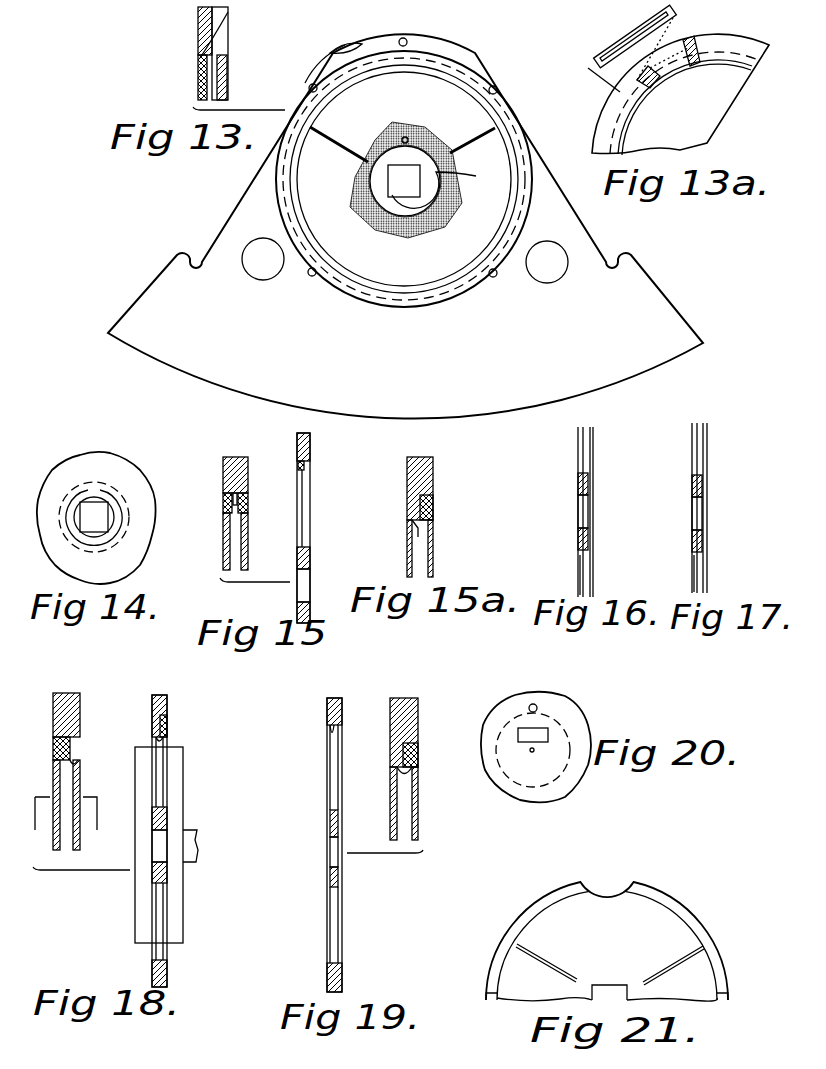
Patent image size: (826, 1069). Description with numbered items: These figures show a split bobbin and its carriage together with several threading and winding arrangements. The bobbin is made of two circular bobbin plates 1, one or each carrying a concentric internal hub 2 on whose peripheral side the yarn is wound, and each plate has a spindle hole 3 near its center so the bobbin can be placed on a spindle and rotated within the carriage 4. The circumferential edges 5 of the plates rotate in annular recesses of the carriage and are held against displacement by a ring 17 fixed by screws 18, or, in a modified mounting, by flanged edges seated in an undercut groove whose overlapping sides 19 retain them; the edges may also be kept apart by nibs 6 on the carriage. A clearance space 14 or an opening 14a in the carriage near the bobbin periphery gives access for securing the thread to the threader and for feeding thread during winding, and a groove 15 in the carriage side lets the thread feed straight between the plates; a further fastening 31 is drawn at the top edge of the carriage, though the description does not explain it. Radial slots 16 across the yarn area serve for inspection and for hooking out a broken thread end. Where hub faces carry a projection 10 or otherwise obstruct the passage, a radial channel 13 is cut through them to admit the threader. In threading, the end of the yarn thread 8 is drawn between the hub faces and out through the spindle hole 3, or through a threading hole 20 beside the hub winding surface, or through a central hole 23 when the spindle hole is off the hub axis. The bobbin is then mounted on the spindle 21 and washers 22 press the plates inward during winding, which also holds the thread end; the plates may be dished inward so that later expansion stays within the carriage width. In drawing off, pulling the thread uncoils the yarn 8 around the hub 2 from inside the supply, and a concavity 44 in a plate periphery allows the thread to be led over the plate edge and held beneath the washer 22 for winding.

In FIG. 13, the bobbin plates 1 is at (186, 95).
In FIG. 13A, the bobbin plates 1 is at (685, 107).
In FIG. 14, the bobbin plates 1 is at (96, 518).
In FIG. 15, the bobbin plates 1 is at (244, 551).
In FIG. 15A, the bobbin plates 1 is at (430, 546).
In FIG. 16, the bobbin plates 1 is at (582, 576).
In FIG. 17, the bobbin plates 1 is at (695, 576).
In FIG. 18, the bobbin plates 1 is at (158, 791).
In FIG. 19, the bobbin plates 1 is at (328, 786).
In FIG. 20, the bobbin plates 1 is at (578, 729).
In FIG. 21, the bobbin plates 1 is at (607, 946).
In FIG. 13, the hub 2 is at (395, 197).
In FIG. 14, the hub 2 is at (96, 552).
In FIG. 15, the hub 2 is at (311, 549).
In FIG. 16, the hub 2 is at (590, 551).
In FIG. 17, the hub 2 is at (703, 551).
In FIG. 18, the hub 2 is at (167, 809).
In FIG. 19, the hub 2 is at (340, 888).
In FIG. 20, the hub 2 is at (500, 790).
In FIG. 13, the spindle hole 3 is at (404, 166).
In FIG. 14, the spindle hole 3 is at (94, 517).
In FIG. 15, the spindle hole 3 is at (311, 588).
In FIG. 16, the spindle hole 3 is at (578, 514).
In FIG. 17, the spindle hole 3 is at (693, 516).
In FIG. 18, the spindle hole 3 is at (167, 841).
In FIG. 19, the spindle hole 3 is at (330, 846).
In FIG. 20, the spindle hole 3 is at (525, 731).
In FIG. 21, the spindle hole 3 is at (603, 985).
In FIG. 13, the carriage 4 is at (189, 22).
In FIG. 13A, the carriage 4 is at (606, 55).
In FIG. 15, the carriage 4 is at (223, 469).
In FIG. 15A, the carriage 4 is at (407, 471).
In FIG. 18, the carriage 4 is at (67, 694).
In FIG. 19, the carriage 4 is at (342, 701).
In FIG. 13, the circumferential edges 5 is at (372, 305).
In FIG. 15, the circumferential edges 5 is at (245, 500).
In FIG. 21, the circumferential edges 5 is at (525, 904).
In FIG. 18, the nibs 6 is at (76, 763).
In FIG. 19, the nibs 6 is at (328, 744).
In FIG. 13, the yarn thread 8 is at (439, 189).
In FIG. 16, the yarn thread 8 is at (580, 449).
In FIG. 17, the yarn thread 8 is at (693, 446).
In FIG. 14, the projection 10 is at (80, 538).
In FIG. 14, the channel 13 is at (96, 490).
In FIG. 13, the clearance space 14 is at (332, 62).
In FIG. 13A, the opening 14a is at (632, 36).
In FIG. 13, the groove 15 is at (342, 47).
In FIG. 13, the slots 16 is at (402, 138).
In FIG. 21, the slots 16 is at (610, 964).
In FIG. 13, the ring 17 is at (440, 303).
In FIG. 13A, the ring 17 is at (620, 131).
In FIG. 15A, the ring 17 is at (434, 509).
In FIG. 18, the ring 17 is at (60, 746).
In FIG. 19, the ring 17 is at (393, 741).
In FIG. 13, the screws 18 is at (311, 277).
In FIG. 15, the overlapping sides 19 is at (224, 517).
In FIG. 13, the threading hole 20 is at (407, 137).
In FIG. 16, the threading hole 20 is at (578, 478).
In FIG. 17, the threading hole 20 is at (693, 481).
In FIG. 18, the threading hole 20 is at (152, 807).
In FIG. 19, the threading hole 20 is at (334, 823).
In FIG. 20, the threading hole 20 is at (537, 706).
In FIG. 18, the spindle 21 is at (197, 861).
In FIG. 18, the washers 22 is at (135, 924).
In FIG. 20, the central hole 23 is at (532, 753).
In FIG. 13, the top screw 31 is at (406, 40).
In FIG. 21, the concavity 44 is at (597, 890).